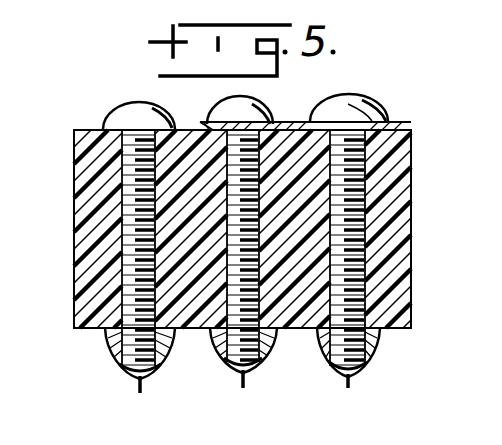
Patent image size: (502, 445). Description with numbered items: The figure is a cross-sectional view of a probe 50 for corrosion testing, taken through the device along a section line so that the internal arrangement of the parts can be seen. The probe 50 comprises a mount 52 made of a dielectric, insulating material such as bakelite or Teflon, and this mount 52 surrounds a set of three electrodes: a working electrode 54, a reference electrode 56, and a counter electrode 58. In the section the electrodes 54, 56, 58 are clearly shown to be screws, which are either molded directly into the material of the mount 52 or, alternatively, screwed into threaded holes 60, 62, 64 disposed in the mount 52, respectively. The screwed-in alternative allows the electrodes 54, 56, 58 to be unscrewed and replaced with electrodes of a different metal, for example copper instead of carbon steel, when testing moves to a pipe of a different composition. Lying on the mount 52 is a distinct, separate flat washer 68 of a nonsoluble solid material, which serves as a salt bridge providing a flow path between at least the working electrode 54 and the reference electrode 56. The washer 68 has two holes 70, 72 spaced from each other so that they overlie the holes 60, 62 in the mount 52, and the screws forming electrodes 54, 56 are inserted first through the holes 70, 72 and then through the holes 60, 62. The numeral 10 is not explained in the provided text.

The circuit board 10 is at (12, 90).
The probe 50 is at (62, 160).
The mount 52 is at (82, 234).
The working electrode 54 is at (351, 96).
The reference electrode 56 is at (225, 112).
The counter electrode 58 is at (137, 104).
The threaded hole 60 is at (372, 336).
The threaded hole 62 is at (266, 340).
The threaded hole 64 is at (117, 338).
The washer 68 is at (293, 119).
The hole 70 is at (367, 107).
The hole 72 is at (256, 119).